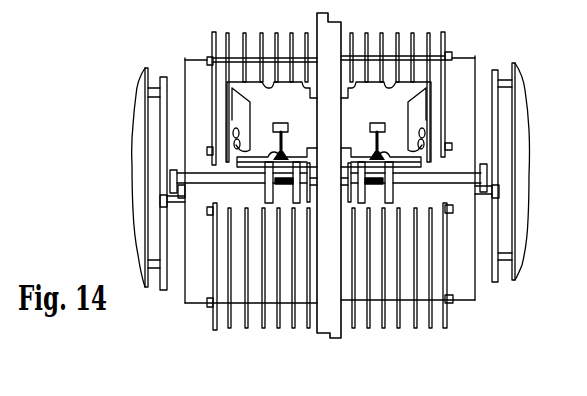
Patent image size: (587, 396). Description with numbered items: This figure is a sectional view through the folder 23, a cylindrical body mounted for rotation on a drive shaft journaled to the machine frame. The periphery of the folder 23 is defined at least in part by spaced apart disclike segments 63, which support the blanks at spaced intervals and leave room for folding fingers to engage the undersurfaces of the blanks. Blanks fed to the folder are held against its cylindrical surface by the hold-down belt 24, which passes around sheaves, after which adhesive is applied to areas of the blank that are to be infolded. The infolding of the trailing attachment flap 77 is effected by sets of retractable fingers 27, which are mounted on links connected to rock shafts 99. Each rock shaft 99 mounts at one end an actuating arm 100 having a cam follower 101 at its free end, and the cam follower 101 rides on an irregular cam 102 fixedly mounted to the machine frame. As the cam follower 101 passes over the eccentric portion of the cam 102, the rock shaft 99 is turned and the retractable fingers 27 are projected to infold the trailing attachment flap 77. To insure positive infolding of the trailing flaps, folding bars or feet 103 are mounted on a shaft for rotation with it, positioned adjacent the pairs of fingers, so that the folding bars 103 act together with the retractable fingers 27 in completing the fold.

The folder 23 is at (483, 51).
The hold-down belt 24 is at (332, 334).
The retractable fingers 27 is at (228, 185).
The disclike segments 63 is at (244, 33).
The trailing attachment flap 77 is at (240, 171).
The rock shaft 99 is at (200, 184).
The actuating arm 100 is at (185, 212).
The cam follower 101 is at (160, 202).
The irregular cam 102 is at (163, 290).
The folding bar or foot 103 is at (292, 133).